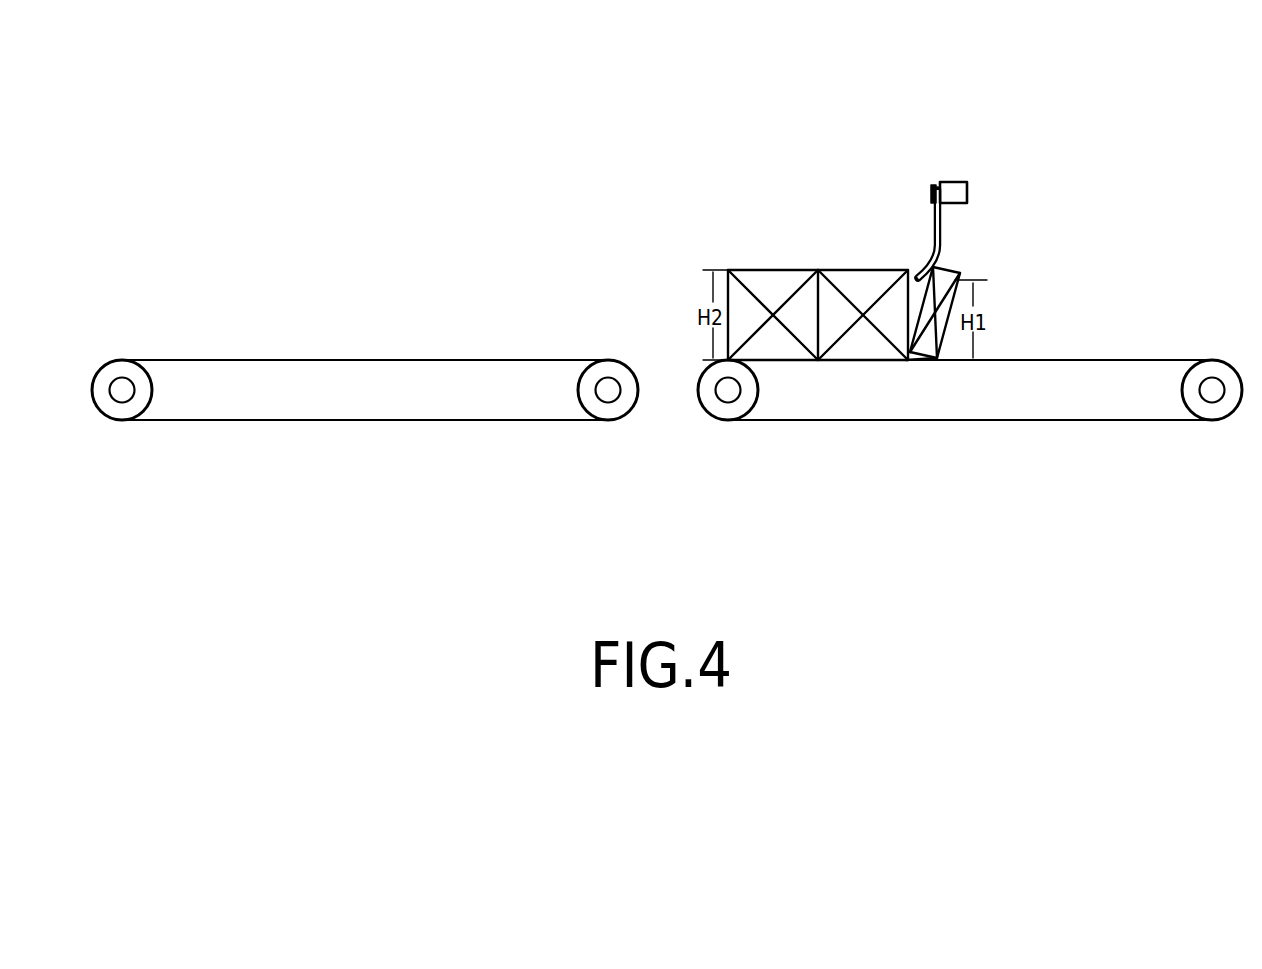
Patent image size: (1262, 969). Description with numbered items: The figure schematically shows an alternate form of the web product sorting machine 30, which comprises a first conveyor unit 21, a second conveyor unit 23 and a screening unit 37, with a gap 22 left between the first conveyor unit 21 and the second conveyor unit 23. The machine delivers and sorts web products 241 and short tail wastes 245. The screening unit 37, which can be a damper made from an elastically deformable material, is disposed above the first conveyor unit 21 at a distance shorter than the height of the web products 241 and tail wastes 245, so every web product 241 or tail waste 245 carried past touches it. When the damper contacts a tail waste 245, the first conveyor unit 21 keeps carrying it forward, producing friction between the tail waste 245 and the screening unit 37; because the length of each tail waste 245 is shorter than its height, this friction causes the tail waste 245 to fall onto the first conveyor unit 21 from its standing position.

The first conveyor unit 21 is at (1075, 343).
The gap 22 is at (675, 360).
The second conveyor unit 23 is at (333, 345).
The web product sorting machine 30 is at (247, 200).
The screening unit 37 is at (953, 173).
The web product 241 is at (775, 275).
The tail waste 245 is at (950, 266).